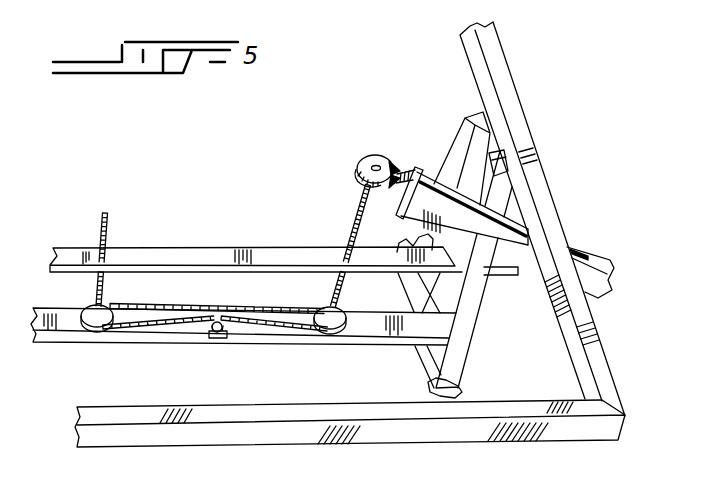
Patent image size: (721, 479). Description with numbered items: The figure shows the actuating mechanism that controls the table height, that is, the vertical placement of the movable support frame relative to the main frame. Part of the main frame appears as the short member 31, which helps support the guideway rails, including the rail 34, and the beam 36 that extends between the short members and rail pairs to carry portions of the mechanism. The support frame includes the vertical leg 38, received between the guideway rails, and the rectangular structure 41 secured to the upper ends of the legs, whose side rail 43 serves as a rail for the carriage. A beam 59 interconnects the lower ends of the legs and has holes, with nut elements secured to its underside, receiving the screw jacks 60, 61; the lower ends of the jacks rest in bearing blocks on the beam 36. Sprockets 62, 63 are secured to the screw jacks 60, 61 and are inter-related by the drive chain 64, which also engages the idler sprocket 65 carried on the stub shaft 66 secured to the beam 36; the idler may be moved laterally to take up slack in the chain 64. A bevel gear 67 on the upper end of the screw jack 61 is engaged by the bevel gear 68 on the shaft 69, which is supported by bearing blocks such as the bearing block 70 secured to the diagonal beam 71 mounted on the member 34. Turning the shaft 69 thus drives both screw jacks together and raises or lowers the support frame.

The short member 31 is at (458, 385).
The guideway rail 34 is at (460, 342).
The beam 36 is at (384, 346).
The vertical leg 38 is at (483, 135).
The rectangular structure 41 is at (612, 354).
The side rail 43 is at (553, 203).
The beam 59 is at (192, 260).
The screw jack 60 is at (112, 236).
The screw jack 61 is at (352, 224).
The sprocket 62 is at (111, 327).
The sprocket 63 is at (328, 330).
The drive chain 64 is at (166, 326).
The idler sprocket 65 is at (227, 334).
The stub shaft 66 is at (213, 333).
The bevel gear 67 is at (357, 167).
The bevel gear 68 is at (398, 162).
The shaft 69 is at (432, 184).
The bearing block 70 is at (417, 168).
The diagonal beam 71 is at (598, 262).